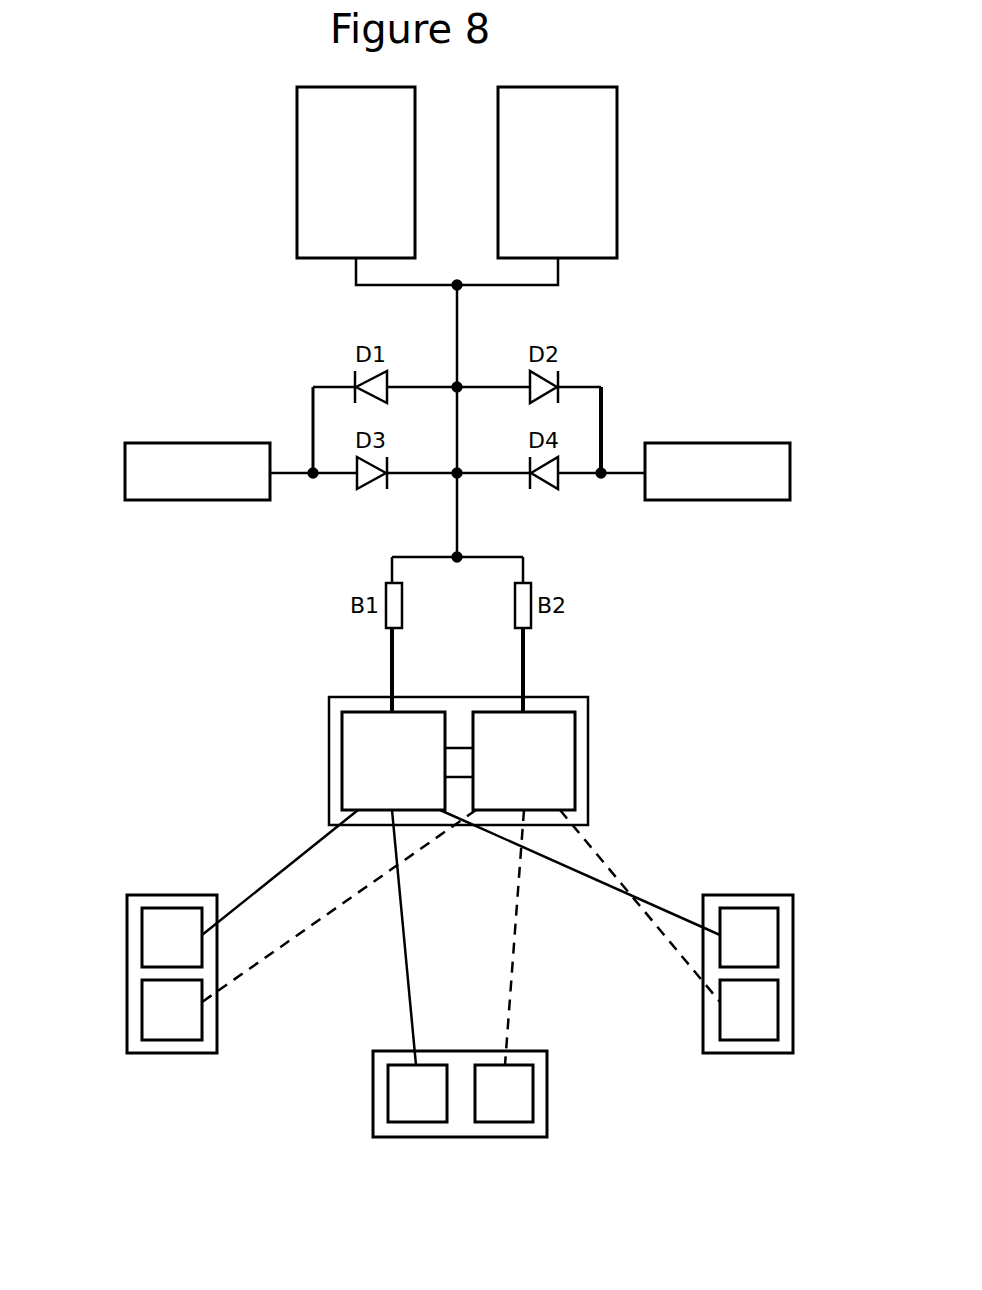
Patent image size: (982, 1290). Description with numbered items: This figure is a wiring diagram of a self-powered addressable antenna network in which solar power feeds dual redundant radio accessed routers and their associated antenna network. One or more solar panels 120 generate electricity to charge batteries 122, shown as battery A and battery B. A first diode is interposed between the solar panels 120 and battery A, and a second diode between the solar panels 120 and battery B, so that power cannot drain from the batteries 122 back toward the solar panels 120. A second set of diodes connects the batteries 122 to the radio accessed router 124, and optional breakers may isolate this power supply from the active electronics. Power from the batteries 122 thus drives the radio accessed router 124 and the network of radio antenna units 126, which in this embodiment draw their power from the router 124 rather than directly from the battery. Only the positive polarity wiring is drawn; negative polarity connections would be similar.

The solar panel 120 is at (457, 172).
The battery 122 is at (162, 443).
The radio accessed router 124 is at (582, 697).
The radio antenna unit 126 is at (137, 897).